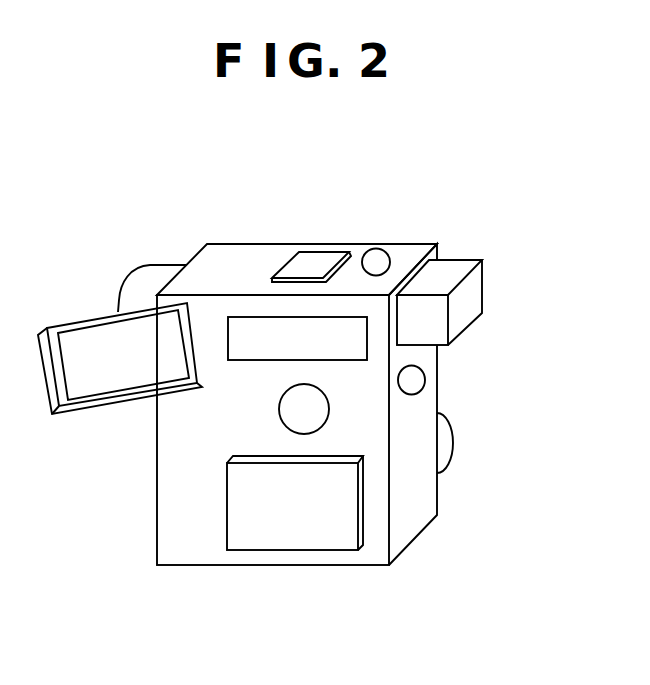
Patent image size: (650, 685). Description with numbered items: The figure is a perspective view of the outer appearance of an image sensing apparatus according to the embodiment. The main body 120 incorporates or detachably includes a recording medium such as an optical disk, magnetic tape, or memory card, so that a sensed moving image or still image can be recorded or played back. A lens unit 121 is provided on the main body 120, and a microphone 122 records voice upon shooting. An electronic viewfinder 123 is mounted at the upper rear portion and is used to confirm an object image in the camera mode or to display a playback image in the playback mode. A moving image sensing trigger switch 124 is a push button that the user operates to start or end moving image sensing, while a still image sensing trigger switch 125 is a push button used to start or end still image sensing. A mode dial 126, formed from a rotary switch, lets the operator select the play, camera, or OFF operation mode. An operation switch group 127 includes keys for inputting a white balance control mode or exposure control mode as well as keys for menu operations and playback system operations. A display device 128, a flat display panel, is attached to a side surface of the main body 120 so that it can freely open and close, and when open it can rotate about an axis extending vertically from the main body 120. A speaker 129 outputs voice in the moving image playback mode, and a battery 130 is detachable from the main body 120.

The main body 120 is at (410, 538).
The lens unit 121 is at (148, 268).
The microphone 122 is at (317, 262).
The electronic viewfinder 123 is at (462, 268).
The moving image sensing trigger switch 124 is at (425, 377).
The still image sensing trigger switch 125 is at (376, 249).
The mode dial 126 is at (453, 445).
The operation switch group 127 is at (242, 325).
The display device 128 is at (57, 323).
The speaker 129 is at (279, 417).
The battery 130 is at (345, 552).